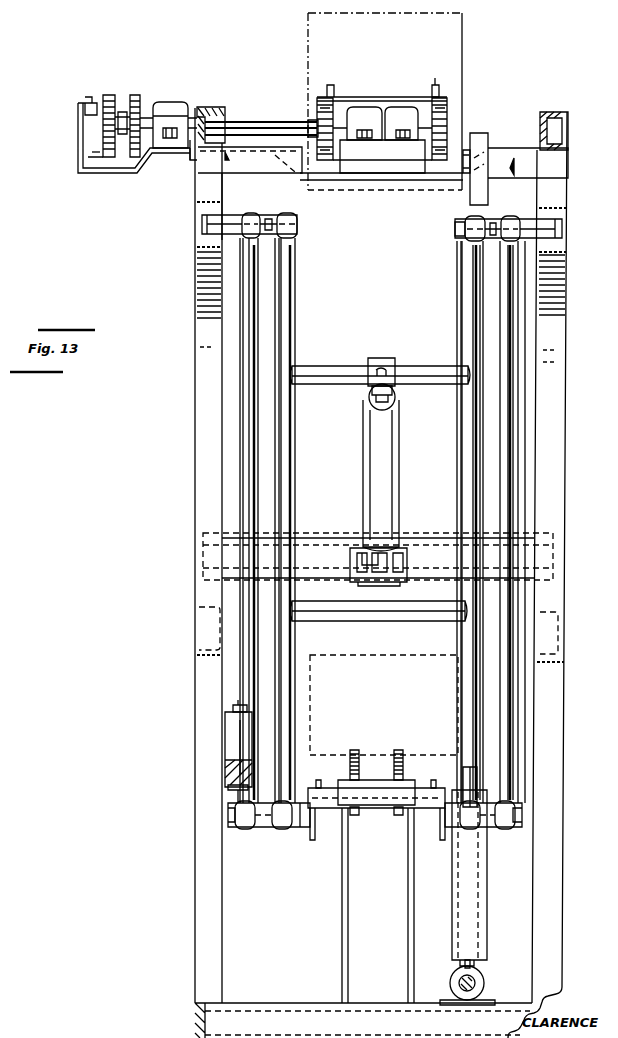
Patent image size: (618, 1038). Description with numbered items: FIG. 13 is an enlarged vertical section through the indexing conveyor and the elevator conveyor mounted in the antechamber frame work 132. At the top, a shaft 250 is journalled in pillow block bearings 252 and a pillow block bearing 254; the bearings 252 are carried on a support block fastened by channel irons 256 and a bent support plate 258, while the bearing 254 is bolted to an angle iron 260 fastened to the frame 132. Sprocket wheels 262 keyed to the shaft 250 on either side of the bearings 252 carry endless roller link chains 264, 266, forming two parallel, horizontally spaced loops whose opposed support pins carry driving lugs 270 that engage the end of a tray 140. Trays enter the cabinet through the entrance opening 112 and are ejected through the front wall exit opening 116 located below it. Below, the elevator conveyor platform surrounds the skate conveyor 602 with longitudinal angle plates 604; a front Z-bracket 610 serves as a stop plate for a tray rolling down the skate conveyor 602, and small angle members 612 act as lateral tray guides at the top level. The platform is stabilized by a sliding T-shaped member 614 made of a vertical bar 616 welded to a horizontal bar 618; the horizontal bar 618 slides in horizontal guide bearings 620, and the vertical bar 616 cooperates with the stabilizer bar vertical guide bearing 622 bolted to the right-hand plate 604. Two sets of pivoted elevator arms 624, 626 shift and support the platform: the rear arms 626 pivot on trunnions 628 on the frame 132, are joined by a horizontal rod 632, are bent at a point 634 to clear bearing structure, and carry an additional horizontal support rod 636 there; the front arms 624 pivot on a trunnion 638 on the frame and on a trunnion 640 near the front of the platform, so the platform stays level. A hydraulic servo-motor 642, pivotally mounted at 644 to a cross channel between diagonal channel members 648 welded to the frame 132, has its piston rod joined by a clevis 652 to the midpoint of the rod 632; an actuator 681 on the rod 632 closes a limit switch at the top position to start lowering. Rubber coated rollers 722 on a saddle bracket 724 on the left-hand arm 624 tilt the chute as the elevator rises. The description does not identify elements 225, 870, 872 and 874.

The entrance opening 112 is at (400, 14).
The front wall exit opening 116 is at (374, 658).
The conveyor frame work 132 is at (208, 108).
The tray 140 is at (436, 86).
The base plate 225 is at (374, 175).
The shaft 250 is at (262, 122).
The pillow block bearings 252 is at (401, 110).
The pillow block bearing 254 is at (177, 104).
The channel irons 256 is at (202, 173).
The bent support plate 258 is at (282, 166).
The angle iron 260 is at (190, 155).
The sprocket wheels 262 is at (333, 162).
The endless roller link chain 264 is at (456, 111).
The endless roller link chain 266 is at (310, 118).
The driving lugs 270 is at (339, 92).
The skate conveyor 602 is at (375, 815).
The longitudinal angle plates 604 is at (314, 842).
The Z-bracket 610 is at (378, 778).
The small angle members 612 is at (327, 780).
The sliding T-shaped member 614 is at (483, 965).
The vertical bar 616 is at (458, 768).
The horizontal bar 618 is at (485, 982).
The horizontal guide bearings 620 is at (450, 976).
The stabilizer bar vertical guide bearing 622 is at (492, 900).
The front elevator arms 624 is at (512, 424).
The elevator arms 626 is at (282, 294).
The trunnions 628 is at (264, 221).
The horizontal rod 632 is at (423, 366).
The bend point 634 is at (290, 620).
The horizontal support rod 636 is at (416, 617).
The trunnion 638 is at (236, 219).
The trunnion 640 is at (298, 830).
The hydraulic servo-motor 642 is at (362, 460).
The pivotal mounting 644 is at (390, 580).
The diagonal channel members 648 is at (199, 395).
The clevis 652 is at (395, 393).
The actuator 681 is at (382, 358).
The rubber coated rollers 722 is at (222, 739).
The saddle bracket 724 is at (236, 703).
The bracket 870 is at (80, 129).
The pin 872 is at (80, 146).
The gear discs 874 is at (88, 98).